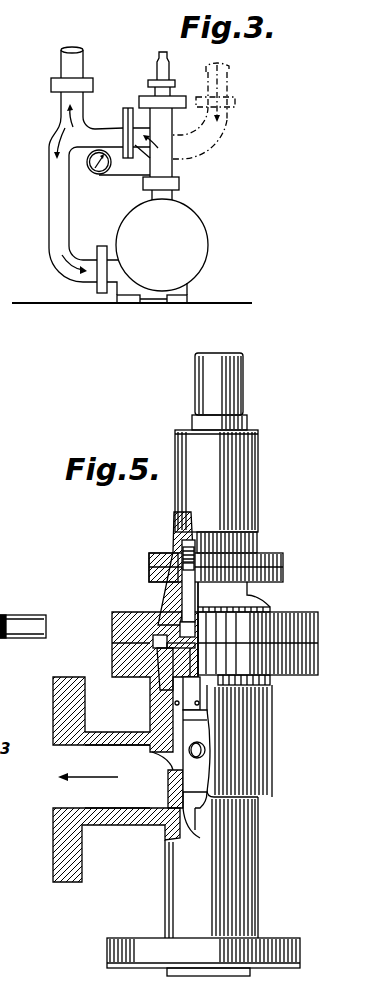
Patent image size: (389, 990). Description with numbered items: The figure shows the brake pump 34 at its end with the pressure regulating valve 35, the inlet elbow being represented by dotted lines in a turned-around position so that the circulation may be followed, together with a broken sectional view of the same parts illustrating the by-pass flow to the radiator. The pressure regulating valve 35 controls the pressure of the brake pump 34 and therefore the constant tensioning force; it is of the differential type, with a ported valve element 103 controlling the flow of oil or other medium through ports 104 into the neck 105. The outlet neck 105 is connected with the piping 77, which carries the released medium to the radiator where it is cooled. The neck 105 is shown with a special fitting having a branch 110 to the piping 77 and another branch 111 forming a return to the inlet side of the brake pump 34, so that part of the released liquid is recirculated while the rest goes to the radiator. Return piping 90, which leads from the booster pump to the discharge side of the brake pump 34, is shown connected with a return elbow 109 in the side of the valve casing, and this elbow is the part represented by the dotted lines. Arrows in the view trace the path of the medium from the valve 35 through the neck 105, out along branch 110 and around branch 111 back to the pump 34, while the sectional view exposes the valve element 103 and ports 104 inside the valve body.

In FIG. 3, the piping 77 is at (61, 66).
In FIG. 3, the branch 110 is at (61, 103).
In FIG. 3, the branch 111 is at (55, 143).
In FIG. 3, the pressure regulating valve 35 is at (158, 64).
In FIG. 3, the neck 105 is at (143, 127).
In FIG. 5, the neck 105 is at (98, 755).
In FIG. 3, the pump 34 is at (186, 222).
In FIG. 3, the piping 90 is at (230, 79).
In FIG. 3, the return elbow 109 is at (215, 135).
In FIG. 5, the ported valve element 103 is at (202, 716).
In FIG. 5, the ports 104 is at (143, 824).